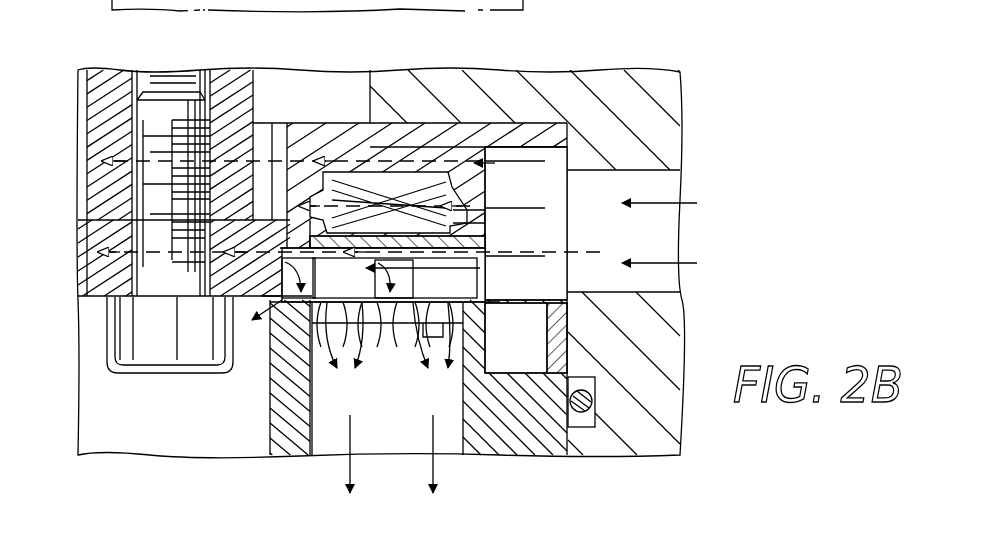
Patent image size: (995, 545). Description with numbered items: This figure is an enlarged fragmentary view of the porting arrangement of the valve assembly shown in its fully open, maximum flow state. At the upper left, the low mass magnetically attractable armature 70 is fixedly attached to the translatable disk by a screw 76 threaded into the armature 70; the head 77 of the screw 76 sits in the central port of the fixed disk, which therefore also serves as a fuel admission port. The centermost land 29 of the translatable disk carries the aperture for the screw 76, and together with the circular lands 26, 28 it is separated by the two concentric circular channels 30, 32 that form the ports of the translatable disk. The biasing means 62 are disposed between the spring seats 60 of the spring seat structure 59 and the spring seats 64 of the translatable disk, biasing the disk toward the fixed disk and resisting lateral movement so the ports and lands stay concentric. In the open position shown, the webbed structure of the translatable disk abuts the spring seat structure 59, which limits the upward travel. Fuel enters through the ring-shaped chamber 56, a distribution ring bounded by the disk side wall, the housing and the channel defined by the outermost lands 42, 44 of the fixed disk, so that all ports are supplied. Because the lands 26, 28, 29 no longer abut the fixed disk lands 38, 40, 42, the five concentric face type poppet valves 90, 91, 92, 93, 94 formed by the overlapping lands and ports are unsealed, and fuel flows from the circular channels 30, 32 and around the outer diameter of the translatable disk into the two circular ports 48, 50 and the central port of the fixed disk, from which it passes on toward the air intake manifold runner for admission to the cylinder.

The armature 70 is at (99, 78).
The screw 76 is at (168, 105).
The circular channel 32 is at (287, 175).
The biasing means 62 is at (340, 193).
The spring seats 64 is at (393, 240).
The spring seat structure 59 is at (422, 125).
The spring seats 60 is at (440, 190).
The circular land 28 is at (368, 268).
The circular channel 30 is at (395, 287).
The circular land 26 is at (458, 273).
The ring-shaped chamber 56 is at (568, 247).
The land 44 is at (557, 313).
The face type poppet valve 94 is at (484, 343).
The land 42 is at (480, 312).
The land 38 is at (316, 313).
The head 77 is at (182, 365).
The circular land 29 is at (248, 270).
The face type poppet valve 90 is at (270, 300).
The land 40 is at (397, 303).
The circular port 48 is at (349, 358).
The circular port 50 is at (436, 358).
The face type poppet valve 91 is at (325, 305).
The face type poppet valve 92 is at (369, 348).
The face type poppet valve 93 is at (405, 348).